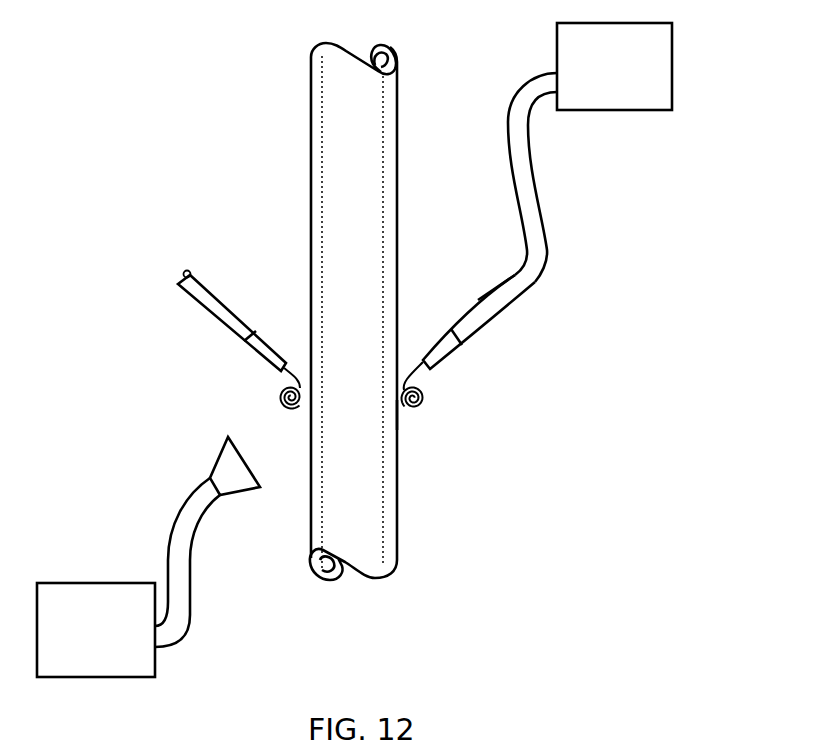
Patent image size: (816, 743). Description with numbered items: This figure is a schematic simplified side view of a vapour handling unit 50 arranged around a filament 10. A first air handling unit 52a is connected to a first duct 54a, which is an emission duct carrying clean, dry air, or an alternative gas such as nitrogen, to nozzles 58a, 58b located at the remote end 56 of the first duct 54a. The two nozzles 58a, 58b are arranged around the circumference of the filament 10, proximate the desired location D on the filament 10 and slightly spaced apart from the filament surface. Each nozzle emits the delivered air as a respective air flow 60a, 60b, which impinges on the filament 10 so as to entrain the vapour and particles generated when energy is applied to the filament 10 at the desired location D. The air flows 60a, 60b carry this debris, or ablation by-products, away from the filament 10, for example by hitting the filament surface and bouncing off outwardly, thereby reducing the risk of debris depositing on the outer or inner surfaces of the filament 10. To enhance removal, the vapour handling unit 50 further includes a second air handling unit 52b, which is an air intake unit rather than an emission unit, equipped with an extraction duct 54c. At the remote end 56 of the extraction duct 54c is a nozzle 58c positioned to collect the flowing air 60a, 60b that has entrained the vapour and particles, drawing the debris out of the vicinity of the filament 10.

The filament 10 is at (310, 78).
The vapour handling unit 50 is at (670, 241).
The first air handling unit 52a is at (673, 50).
The second air handling unit 52b is at (125, 678).
The first duct 54a is at (512, 86).
The extraction duct 54c is at (197, 610).
The remote end 56 is at (462, 318).
The nozzle 58a is at (452, 358).
The nozzle 58b is at (250, 355).
The nozzle 58c is at (237, 495).
The air flow 60a is at (427, 405).
The air flow 60b is at (278, 398).
The desired location D is at (398, 417).